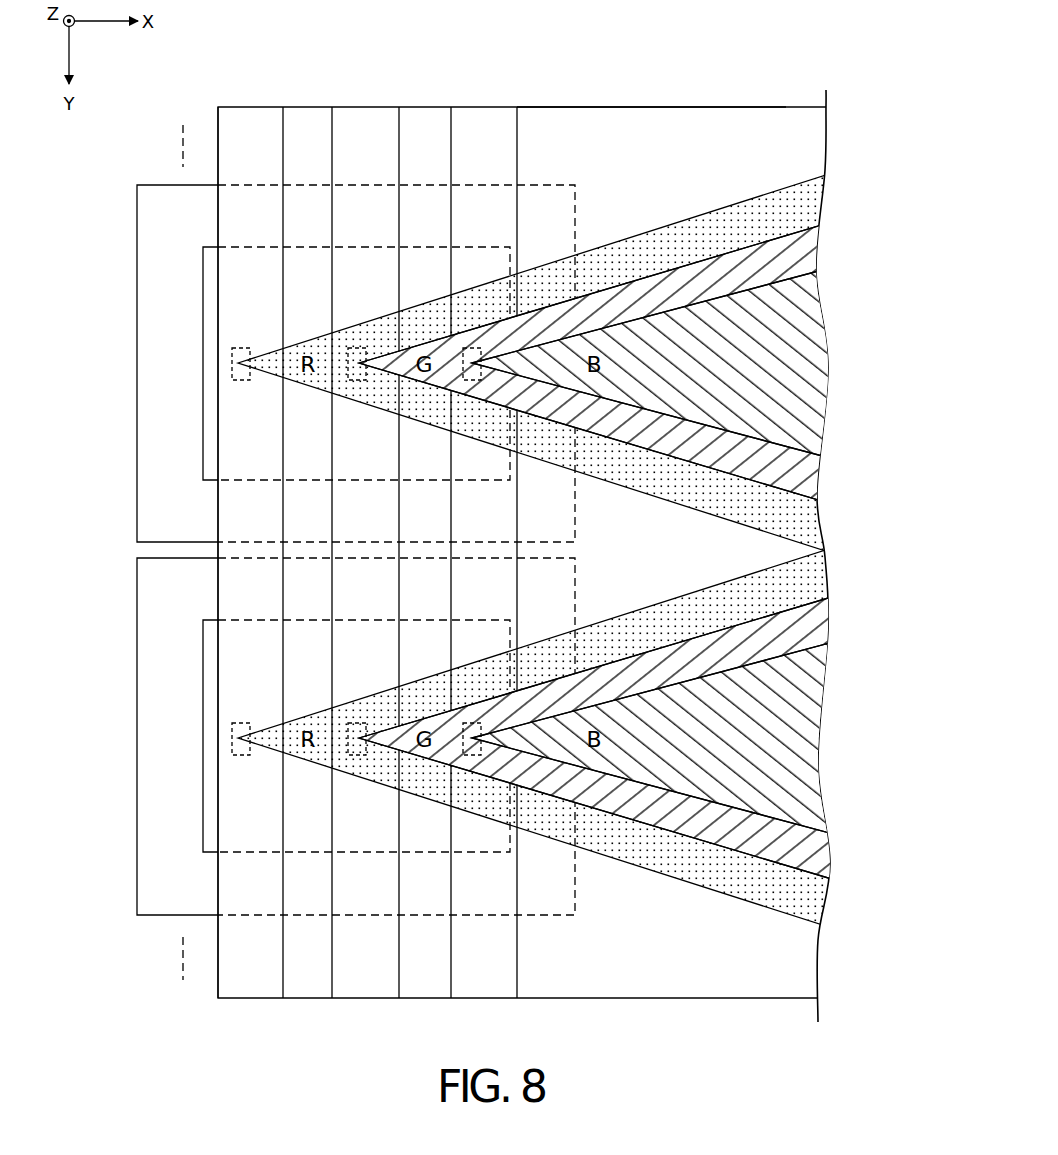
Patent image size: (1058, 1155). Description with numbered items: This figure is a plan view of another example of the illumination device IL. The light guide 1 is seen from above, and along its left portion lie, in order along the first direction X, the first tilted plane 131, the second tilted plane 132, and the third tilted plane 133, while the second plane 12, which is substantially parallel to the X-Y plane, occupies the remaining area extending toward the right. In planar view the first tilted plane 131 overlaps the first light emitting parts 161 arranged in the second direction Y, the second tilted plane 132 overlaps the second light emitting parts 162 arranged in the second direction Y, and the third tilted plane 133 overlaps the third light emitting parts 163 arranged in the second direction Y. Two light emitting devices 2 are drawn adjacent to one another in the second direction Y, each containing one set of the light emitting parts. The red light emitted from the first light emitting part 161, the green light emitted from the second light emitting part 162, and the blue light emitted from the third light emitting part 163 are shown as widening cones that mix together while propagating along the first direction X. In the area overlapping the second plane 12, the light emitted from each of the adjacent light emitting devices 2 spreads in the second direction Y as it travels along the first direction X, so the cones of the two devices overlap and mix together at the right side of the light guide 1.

The light guide 1 is at (786, 106).
The second plane 12 is at (636, 127).
The first tilted plane 131 is at (245, 111).
The second tilted plane 132 is at (367, 111).
The third tilted plane 133 is at (484, 111).
The light emitting device 2 is at (137, 248).
The first light emitting part 161 is at (240, 381).
The second light emitting part 162 is at (356, 381).
The third light emitting part 163 is at (475, 382).
The illumination device IL is at (846, 112).